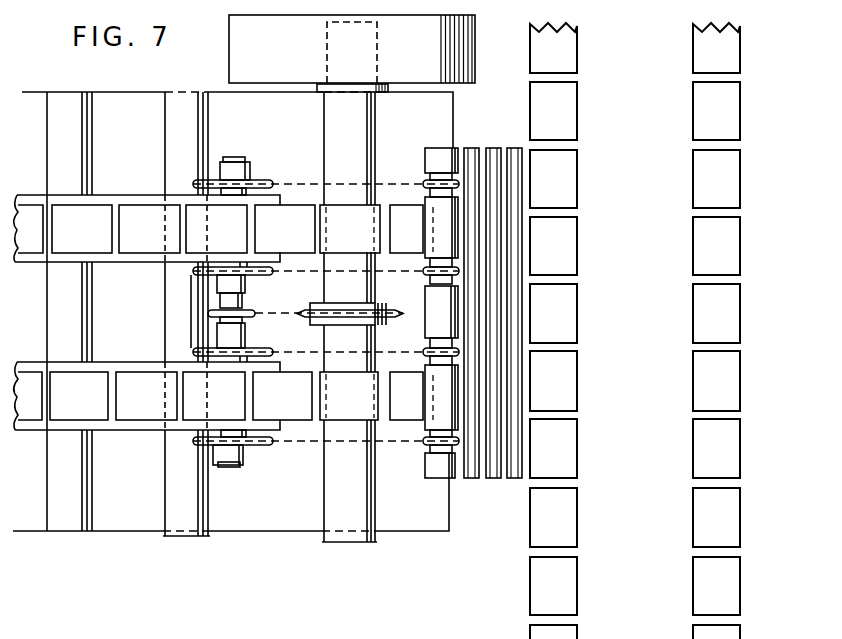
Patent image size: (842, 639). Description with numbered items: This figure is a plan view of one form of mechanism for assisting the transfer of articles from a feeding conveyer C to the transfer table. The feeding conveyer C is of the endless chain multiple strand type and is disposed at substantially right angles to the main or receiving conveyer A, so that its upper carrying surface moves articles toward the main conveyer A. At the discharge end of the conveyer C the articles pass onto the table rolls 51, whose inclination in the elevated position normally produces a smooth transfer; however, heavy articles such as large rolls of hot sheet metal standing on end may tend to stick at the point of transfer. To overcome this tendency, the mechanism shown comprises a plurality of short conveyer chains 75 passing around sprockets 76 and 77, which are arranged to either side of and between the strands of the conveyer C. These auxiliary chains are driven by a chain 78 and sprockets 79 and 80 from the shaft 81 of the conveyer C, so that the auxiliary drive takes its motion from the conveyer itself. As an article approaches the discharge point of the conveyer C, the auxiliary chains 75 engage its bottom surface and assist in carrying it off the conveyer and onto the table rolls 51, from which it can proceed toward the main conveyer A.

The main conveyer A is at (568, 125).
The feeding conveyer C is at (133, 212).
The table rolls 51 is at (513, 262).
The short conveyer chains 75 is at (341, 184).
The sprockets 76 is at (261, 181).
The sprockets 77 is at (424, 182).
The chain 78 is at (267, 311).
The sprocket 79 is at (251, 318).
The sprocket 80 is at (323, 310).
The shaft 81 is at (333, 117).